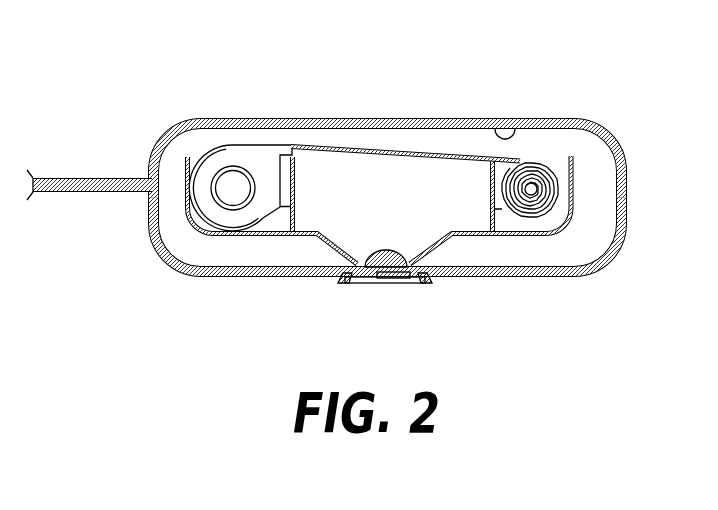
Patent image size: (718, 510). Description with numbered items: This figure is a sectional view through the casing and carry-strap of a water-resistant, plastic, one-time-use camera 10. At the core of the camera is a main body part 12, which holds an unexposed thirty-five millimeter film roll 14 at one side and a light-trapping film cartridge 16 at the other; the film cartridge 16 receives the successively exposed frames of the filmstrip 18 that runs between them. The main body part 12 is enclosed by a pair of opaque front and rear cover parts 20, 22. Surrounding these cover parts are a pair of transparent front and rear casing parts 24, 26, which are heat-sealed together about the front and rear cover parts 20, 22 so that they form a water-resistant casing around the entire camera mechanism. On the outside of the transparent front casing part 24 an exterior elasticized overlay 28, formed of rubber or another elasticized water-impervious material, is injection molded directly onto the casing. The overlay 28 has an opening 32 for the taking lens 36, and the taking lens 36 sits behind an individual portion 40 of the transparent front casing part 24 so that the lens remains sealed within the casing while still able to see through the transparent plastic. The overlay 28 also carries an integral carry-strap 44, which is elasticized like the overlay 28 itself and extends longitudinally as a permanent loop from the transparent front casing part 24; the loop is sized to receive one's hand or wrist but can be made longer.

The one-time-use camera 10 is at (314, 91).
The main body part 12 is at (453, 233).
The unexposed 35 mm film roll 14 is at (548, 162).
The light-trapping film cartridge 16 is at (250, 143).
The filmstrip 18 is at (393, 143).
The front cover part 20 is at (472, 233).
The rear cover part 22 is at (492, 122).
The transparent front casing part 24 is at (550, 262).
The transparent rear casing part 26 is at (588, 122).
The exterior elasticized overlay 28 is at (262, 278).
The opening 32 is at (407, 283).
The taking lens 36 is at (392, 250).
The portion of the transparent front casing part 40 is at (377, 283).
The carry-strap 44 is at (98, 178).